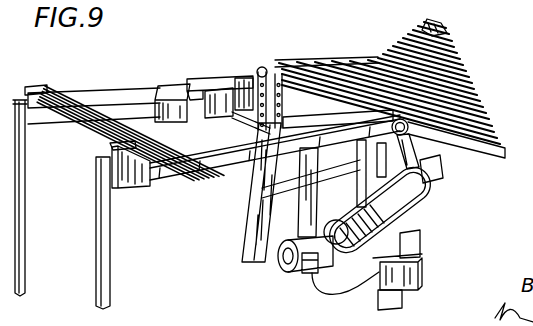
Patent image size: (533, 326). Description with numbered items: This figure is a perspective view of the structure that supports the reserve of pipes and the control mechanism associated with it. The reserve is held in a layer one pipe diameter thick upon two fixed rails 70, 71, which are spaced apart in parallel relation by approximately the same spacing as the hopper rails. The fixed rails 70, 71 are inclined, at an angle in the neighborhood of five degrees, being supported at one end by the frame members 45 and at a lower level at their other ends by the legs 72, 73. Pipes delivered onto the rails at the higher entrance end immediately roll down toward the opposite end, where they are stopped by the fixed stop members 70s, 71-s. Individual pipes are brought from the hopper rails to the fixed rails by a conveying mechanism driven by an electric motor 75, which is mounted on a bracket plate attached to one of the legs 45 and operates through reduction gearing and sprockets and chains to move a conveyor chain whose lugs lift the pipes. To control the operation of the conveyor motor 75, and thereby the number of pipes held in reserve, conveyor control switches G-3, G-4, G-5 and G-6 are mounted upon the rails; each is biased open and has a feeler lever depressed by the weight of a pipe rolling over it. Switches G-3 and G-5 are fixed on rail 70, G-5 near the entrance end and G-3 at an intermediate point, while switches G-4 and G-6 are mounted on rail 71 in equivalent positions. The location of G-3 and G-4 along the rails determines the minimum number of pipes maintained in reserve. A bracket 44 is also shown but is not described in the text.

The bracket 44 is at (417, 268).
The frame members 45 is at (256, 228).
The fixed rail 70 is at (133, 174).
The fixed stop member 70s is at (113, 143).
The fixed rail 71 is at (189, 90).
The fixed stop member 71-s is at (45, 90).
The leg 72 is at (109, 263).
The leg 73 is at (21, 235).
The electric motor 75 is at (296, 279).
The conveyor control switch G-3 is at (292, 158).
The conveyor control switch G-4 is at (163, 99).
The conveyor control switch G-5 is at (393, 183).
The conveyor control switch G-6 is at (218, 99).